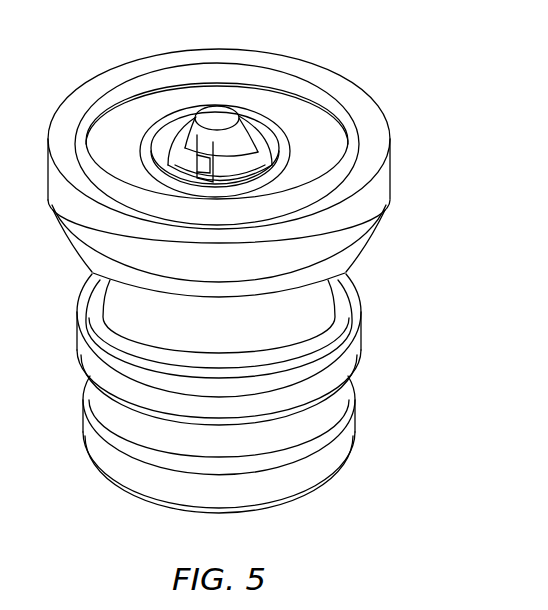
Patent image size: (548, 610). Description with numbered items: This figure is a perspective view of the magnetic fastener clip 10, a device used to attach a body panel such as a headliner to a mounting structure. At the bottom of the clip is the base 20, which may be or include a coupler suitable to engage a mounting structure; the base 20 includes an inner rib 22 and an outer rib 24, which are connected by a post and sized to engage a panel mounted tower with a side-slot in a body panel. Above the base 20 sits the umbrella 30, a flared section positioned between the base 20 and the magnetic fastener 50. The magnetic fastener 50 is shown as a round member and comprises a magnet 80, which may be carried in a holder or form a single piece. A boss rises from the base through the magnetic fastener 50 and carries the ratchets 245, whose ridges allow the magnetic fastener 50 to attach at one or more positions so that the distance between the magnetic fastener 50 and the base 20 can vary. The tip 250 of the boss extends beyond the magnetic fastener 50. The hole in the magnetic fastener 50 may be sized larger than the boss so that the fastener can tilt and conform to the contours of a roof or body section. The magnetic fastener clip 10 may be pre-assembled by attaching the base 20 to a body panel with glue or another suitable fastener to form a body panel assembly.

The magnetic fastener clip 10 is at (34, 72).
The base 20 is at (261, 393).
The inner rib 22 is at (347, 357).
The outer rib 24 is at (238, 444).
The umbrella 30 is at (312, 295).
The magnetic fastener 50 is at (220, 305).
The magnet 80 is at (307, 118).
The ratchets 245 is at (185, 180).
The tip 250 is at (227, 133).